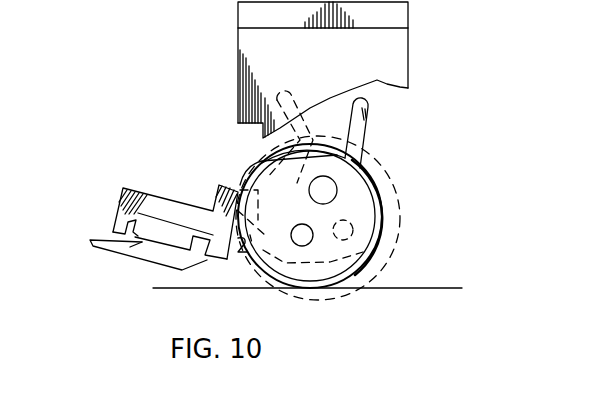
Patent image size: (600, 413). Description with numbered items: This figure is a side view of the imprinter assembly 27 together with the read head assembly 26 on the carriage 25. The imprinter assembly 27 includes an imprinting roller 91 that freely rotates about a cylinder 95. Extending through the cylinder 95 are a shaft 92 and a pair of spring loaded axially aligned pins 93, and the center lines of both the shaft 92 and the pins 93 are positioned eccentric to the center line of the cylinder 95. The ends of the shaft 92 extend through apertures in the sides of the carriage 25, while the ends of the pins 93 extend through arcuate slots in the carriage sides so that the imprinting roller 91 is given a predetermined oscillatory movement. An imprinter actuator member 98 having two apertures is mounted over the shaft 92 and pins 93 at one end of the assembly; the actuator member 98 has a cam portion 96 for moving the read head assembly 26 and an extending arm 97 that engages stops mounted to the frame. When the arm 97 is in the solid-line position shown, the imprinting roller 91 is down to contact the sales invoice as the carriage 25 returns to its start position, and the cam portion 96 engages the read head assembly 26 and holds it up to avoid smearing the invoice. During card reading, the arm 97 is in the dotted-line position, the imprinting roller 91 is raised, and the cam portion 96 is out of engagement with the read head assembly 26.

The carriage 25 is at (408, 57).
The read head assembly 26 is at (88, 250).
The imprinter assembly 27 is at (386, 151).
The imprinting roller 91 is at (380, 240).
The shaft 92 is at (323, 190).
The spring loaded axially aligned pins 93 is at (302, 235).
The cylinder 95 is at (362, 260).
The cam portion 96 is at (248, 167).
The extending arm 97 is at (358, 128).
The imprinter actuator member 98 is at (368, 207).